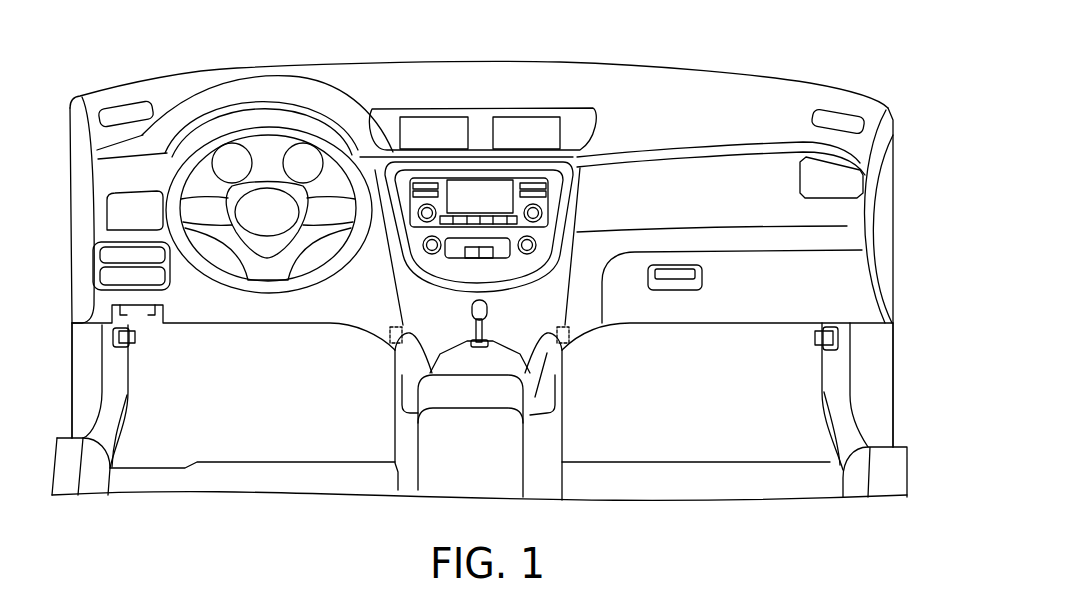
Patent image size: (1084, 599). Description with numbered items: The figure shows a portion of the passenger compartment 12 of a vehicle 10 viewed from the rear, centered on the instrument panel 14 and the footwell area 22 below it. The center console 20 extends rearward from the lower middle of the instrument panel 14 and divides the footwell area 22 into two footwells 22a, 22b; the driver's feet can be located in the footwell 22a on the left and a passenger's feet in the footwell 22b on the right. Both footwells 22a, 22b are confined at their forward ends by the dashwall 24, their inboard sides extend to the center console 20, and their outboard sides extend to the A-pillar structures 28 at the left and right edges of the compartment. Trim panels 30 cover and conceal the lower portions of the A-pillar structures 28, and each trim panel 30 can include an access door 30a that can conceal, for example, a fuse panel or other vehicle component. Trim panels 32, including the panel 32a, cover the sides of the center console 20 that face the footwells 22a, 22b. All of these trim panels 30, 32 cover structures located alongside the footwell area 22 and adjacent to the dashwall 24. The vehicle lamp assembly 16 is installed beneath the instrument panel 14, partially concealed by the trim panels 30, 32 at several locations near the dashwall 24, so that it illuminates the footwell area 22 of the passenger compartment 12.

The vehicle 10 is at (727, 35).
The passenger compartment 12 is at (787, 393).
The instrument panel 14 is at (403, 177).
The vehicle lamp assembly 16 is at (137, 342).
The center console 20 is at (465, 450).
The footwell area 22 is at (675, 370).
The footwell 22a is at (265, 407).
The footwell 22b is at (718, 425).
The dashwall 24 is at (212, 368).
The A-pillar structures 28 is at (85, 398).
The trim panels 30 is at (117, 440).
The access door 30a is at (127, 408).
The trim panels 32 is at (405, 363).
The trim panel 32a is at (393, 425).